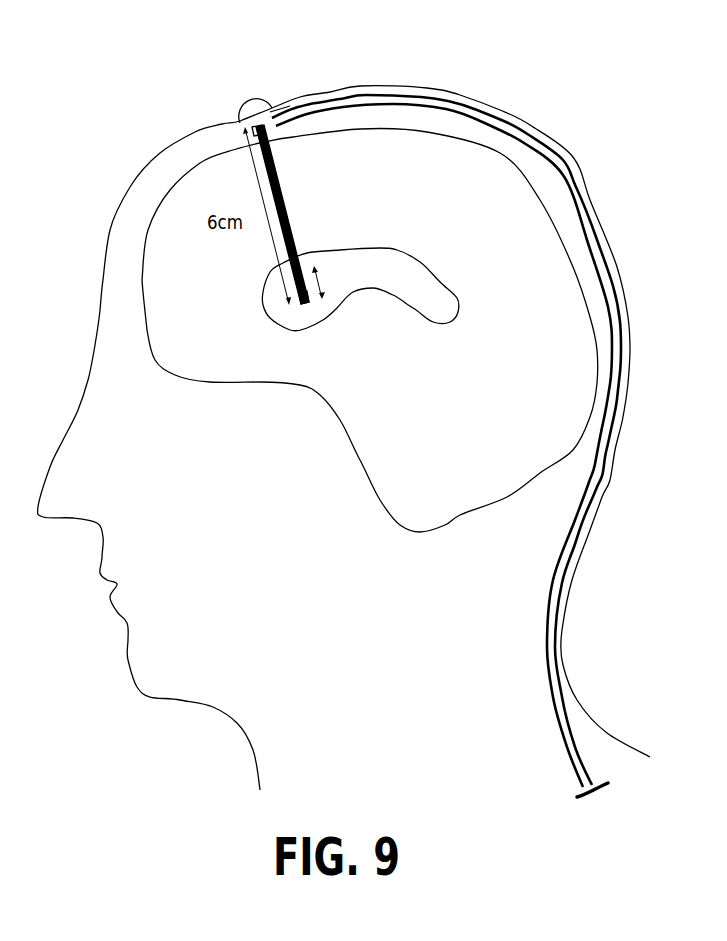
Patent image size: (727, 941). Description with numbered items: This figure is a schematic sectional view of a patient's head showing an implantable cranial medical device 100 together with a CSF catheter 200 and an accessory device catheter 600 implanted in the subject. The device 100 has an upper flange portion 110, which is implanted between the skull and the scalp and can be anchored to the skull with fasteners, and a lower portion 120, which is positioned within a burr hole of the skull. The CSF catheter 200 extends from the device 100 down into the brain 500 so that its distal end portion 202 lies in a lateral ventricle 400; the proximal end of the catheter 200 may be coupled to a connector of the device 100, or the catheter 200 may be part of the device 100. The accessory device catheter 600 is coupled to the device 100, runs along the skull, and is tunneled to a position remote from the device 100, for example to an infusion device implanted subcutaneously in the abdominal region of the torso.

The implantable medical device 100 is at (252, 102).
The upper flange portion 110 is at (288, 108).
The lower portion 120 is at (253, 128).
The CSF catheter 200 is at (298, 227).
The distal end portion 202 is at (303, 302).
The lateral ventricle 400 is at (390, 268).
The brain 500 is at (444, 470).
The accessory device catheter 600 is at (455, 105).